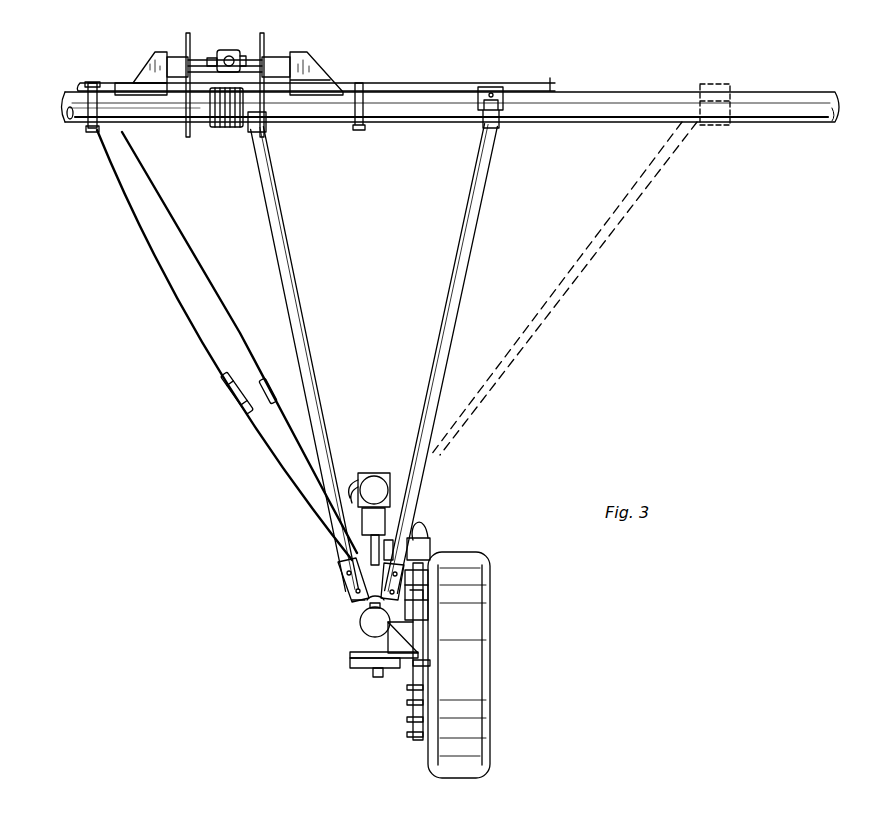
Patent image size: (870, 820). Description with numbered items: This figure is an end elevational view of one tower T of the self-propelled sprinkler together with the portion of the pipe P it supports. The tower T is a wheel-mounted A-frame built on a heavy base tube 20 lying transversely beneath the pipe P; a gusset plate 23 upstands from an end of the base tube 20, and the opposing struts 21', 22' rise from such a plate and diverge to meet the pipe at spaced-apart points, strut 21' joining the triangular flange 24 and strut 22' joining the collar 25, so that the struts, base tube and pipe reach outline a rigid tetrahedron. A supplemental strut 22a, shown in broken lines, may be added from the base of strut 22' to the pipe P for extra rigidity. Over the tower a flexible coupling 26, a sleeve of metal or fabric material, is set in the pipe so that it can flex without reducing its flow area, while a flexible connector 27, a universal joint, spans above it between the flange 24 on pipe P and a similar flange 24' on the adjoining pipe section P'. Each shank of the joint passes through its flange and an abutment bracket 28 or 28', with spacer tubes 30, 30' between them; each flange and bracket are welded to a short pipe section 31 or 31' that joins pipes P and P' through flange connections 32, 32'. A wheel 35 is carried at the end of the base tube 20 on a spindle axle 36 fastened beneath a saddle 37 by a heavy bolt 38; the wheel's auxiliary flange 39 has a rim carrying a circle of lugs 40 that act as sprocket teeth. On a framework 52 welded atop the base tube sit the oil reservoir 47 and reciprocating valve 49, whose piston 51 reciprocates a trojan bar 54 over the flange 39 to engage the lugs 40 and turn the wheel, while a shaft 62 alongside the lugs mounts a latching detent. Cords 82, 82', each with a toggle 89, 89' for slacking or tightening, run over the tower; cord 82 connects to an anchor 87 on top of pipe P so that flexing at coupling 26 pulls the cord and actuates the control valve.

The pipe P is at (451, 91).
The pipe section P' is at (60, 75).
The tower T is at (440, 31).
The base tube 20 is at (365, 626).
The strut 21' is at (310, 364).
The strut 22' is at (450, 362).
The supplemental strut 22a is at (597, 256).
The gusset plate 23 is at (358, 603).
The triangular flange 24 is at (275, 73).
The triangular flange 24' is at (174, 75).
The collar 25 is at (500, 98).
The flexible coupling 26 is at (235, 129).
The flexible connector 27 is at (229, 48).
The abutment bracket 28 is at (324, 73).
The abutment bracket 28' is at (131, 71).
The spacer tube 30 is at (244, 55).
The spacer tube 30' is at (161, 58).
The short pipe section 31 is at (204, 131).
The short pipe section 31' is at (205, 135).
The flange connection 32 is at (379, 118).
The flange connection 32' is at (81, 123).
The wheel 35 is at (468, 673).
The spindle axle 36 is at (367, 666).
The saddle 37 is at (367, 648).
The bolt 38 is at (378, 678).
The auxiliary flange 39 is at (424, 648).
The lugs 40 is at (412, 723).
The oil reservoir 47 is at (378, 478).
The reciprocating valve 49 is at (386, 548).
The piston 51 is at (426, 536).
The framework 52 is at (372, 545).
The trojan bar 54 is at (432, 550).
The shaft 62 is at (401, 621).
The cord 82 is at (239, 342).
The cord 82' is at (224, 345).
The anchor 87 is at (550, 82).
The toggle 89 is at (271, 380).
The toggle 89' is at (218, 393).